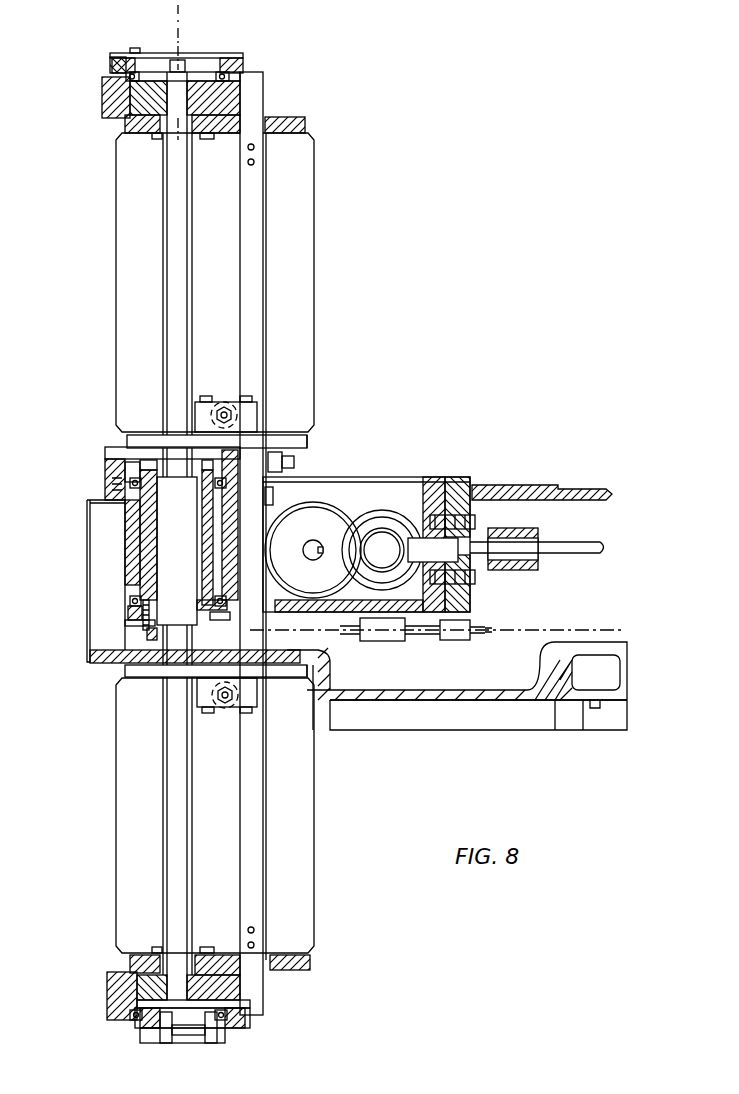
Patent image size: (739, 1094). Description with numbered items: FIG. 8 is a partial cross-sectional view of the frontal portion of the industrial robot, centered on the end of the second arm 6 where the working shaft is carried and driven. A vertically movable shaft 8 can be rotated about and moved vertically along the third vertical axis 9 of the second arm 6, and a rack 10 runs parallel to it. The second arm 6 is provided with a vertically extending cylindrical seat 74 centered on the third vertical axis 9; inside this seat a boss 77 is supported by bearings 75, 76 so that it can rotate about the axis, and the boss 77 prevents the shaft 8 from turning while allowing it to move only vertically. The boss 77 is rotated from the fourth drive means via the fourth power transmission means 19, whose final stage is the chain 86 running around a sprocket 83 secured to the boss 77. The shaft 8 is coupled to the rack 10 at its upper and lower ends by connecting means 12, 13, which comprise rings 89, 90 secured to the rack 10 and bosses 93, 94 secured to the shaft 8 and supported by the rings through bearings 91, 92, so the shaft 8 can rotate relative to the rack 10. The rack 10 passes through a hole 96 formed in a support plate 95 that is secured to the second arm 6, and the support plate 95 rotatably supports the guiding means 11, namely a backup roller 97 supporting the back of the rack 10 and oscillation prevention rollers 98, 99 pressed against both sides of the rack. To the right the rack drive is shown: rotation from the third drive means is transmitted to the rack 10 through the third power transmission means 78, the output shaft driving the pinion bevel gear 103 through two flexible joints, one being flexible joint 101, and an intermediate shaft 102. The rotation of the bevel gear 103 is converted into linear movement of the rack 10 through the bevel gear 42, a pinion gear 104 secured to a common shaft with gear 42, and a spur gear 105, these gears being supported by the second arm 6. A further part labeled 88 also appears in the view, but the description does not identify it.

The second arm 6 is at (90, 660).
The vertically movable shaft 8 is at (172, 243).
The third vertical axis 9 is at (184, 22).
The rack 10 is at (255, 252).
The guiding means 11 is at (256, 416).
The connecting means 12 is at (246, 62).
The connecting means 13 is at (240, 1022).
The fourth power transmission means 19 is at (508, 632).
The bevel gear 42 is at (386, 545).
The cylindrical seat 74 is at (120, 558).
The bearing 75 is at (112, 484).
The bearing 76 is at (133, 612).
The boss 77 is at (150, 526).
The third power transmission means 78 is at (578, 553).
The sprocket 83 is at (138, 642).
The chain 86 is at (596, 625).
The column edge 88 is at (266, 300).
The ring 89 is at (105, 98).
The ring 90 is at (115, 1000).
The bearing 91 is at (112, 65).
The bearing 92 is at (135, 1028).
The boss 93 is at (120, 118).
The boss 94 is at (130, 968).
The support plate 95 is at (310, 440).
The hole 96 is at (258, 437).
The backup roller 97 is at (224, 402).
The oscillation prevention roller 98 is at (273, 496).
The oscillation prevention roller 99 is at (296, 462).
The flexible joint 101 is at (515, 568).
The intermediate shaft 102 is at (592, 542).
The pinion bevel gear 103 is at (420, 510).
The pinion gear 104 is at (384, 556).
The spur gear 105 is at (335, 518).